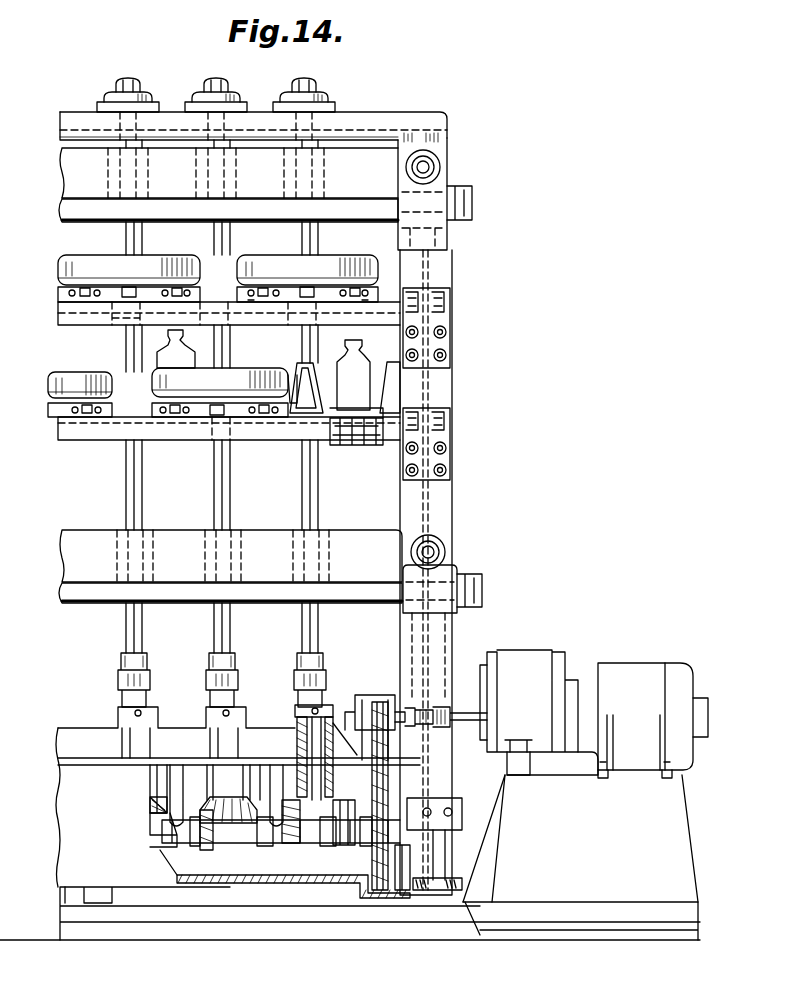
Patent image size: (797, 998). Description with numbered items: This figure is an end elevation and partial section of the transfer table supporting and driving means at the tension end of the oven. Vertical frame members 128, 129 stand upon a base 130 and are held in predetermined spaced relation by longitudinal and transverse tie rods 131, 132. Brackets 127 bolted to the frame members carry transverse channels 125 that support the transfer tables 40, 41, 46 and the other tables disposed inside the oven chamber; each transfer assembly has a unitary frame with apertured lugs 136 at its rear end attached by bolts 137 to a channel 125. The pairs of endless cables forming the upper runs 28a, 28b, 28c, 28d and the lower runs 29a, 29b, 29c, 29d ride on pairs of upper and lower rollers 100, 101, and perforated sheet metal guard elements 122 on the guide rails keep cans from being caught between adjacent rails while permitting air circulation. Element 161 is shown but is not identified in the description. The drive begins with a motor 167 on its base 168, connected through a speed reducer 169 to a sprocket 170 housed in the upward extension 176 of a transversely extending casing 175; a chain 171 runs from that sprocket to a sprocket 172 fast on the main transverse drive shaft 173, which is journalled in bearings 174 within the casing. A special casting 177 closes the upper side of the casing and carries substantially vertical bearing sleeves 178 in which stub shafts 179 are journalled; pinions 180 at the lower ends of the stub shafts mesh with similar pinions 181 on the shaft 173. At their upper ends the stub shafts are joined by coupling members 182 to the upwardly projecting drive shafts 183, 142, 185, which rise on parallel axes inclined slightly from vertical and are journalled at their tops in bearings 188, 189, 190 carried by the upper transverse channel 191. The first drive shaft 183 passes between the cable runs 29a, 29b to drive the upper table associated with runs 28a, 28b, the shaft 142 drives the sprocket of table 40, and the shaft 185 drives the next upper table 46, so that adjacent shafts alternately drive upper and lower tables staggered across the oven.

The bearing 190 is at (138, 100).
The bearing 189 is at (226, 100).
The bearing 188 is at (320, 100).
The upper transverse channel 191 is at (410, 124).
The longitudinal tie rod 131 is at (428, 167).
The transverse tie rod 132 is at (78, 208).
The bolt 137 is at (132, 292).
The transfer table 46 is at (155, 255).
The apertured lug 136 is at (304, 293).
The housing 161 is at (70, 272).
The cable run 28d is at (73, 298).
The cable run 28c is at (187, 298).
The cable run 28b is at (276, 298).
The cable run 28a is at (343, 298).
The transverse channel 125 is at (328, 300).
The transfer table 41 is at (72, 372).
The transfer table 40 is at (239, 372).
The cable run 29a is at (328, 395).
The cable run 29d is at (97, 415).
The cable run 29c is at (186, 415).
The cable run 29b is at (274, 415).
The upper roller 100 is at (345, 445).
The lower roller 101 is at (372, 445).
The bracket 127 is at (453, 318).
The vertical frame member 128 is at (436, 385).
The guard element 122 is at (400, 382).
The drive shaft 185 is at (128, 625).
The drive shaft 142 is at (216, 622).
The first drive shaft 183 is at (305, 620).
The coupling member 182 is at (120, 664).
The special casting 177 is at (172, 748).
The bearing sleeve 178 is at (295, 722).
The stub shaft 179 is at (297, 750).
The upward extension 176 is at (365, 700).
The sprocket 170 is at (380, 712).
The chain 171 is at (403, 792).
The vertical frame member 129 is at (450, 788).
The speed reducer 169 is at (532, 670).
The motor 167 is at (645, 676).
The base 168 is at (662, 815).
The pinion 180 is at (228, 823).
The pinion 181 is at (212, 846).
The bearing 174 is at (178, 850).
The casing 175 is at (222, 884).
The main transverse drive shaft 173 is at (330, 845).
The sprocket 172 is at (398, 872).
The base 130 is at (170, 918).